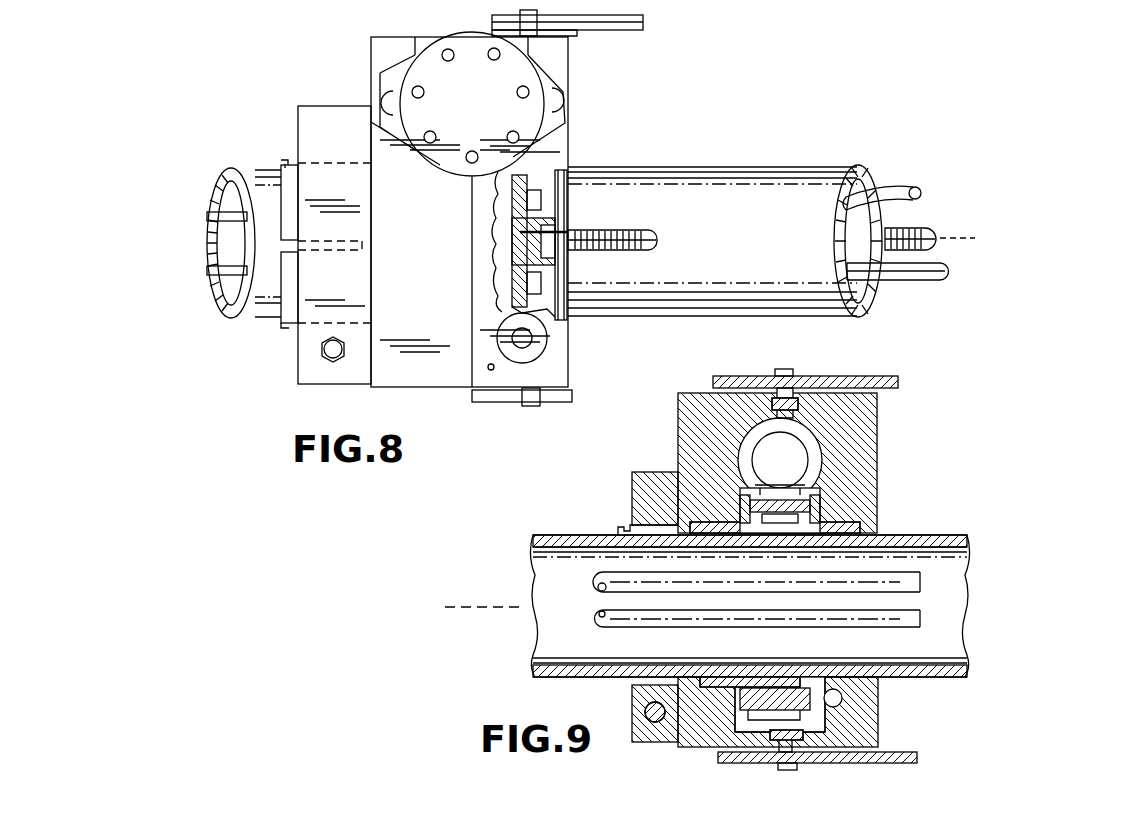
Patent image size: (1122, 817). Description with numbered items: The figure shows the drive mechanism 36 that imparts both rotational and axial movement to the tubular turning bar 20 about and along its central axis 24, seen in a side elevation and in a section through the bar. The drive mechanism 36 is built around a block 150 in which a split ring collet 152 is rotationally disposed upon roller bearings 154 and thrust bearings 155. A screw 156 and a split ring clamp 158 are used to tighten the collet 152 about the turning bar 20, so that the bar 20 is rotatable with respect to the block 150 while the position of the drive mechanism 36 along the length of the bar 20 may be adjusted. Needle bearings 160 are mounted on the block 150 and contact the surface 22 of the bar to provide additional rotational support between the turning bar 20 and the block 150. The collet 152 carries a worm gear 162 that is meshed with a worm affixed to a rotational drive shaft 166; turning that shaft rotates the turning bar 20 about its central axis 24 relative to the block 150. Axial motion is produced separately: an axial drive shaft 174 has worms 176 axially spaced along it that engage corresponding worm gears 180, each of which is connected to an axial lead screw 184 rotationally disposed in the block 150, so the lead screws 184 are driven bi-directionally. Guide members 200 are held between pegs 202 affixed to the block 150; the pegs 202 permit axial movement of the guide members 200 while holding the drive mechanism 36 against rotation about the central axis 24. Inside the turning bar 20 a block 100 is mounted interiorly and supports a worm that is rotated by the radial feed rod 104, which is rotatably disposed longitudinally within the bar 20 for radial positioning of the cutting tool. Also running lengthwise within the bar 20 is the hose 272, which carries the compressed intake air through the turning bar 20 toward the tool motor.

In FIG. 8, the turning bar 20 is at (740, 165).
In FIG. 9, the turning bar 20 is at (572, 532).
In FIG. 8, the surface 22 is at (762, 242).
In FIG. 9, the surface 22 is at (900, 535).
In FIG. 8, the central axis 24 is at (940, 244).
In FIG. 9, the central axis 24 is at (500, 612).
In FIG. 8, the drive mechanism 36 is at (355, 66).
In FIG. 9, the drive mechanism 36 is at (666, 420).
In FIG. 8, the block 100 is at (597, 30).
In FIG. 8, the radial feed rod 104 is at (884, 282).
In FIG. 9, the radial feed rod 104 is at (625, 628).
In FIG. 8, the block 150 is at (418, 388).
In FIG. 9, the block 150 is at (877, 445).
In FIG. 8, the split ring collet 152 is at (284, 162).
In FIG. 9, the split ring collet 152 is at (618, 525).
In FIG. 9, the roller bearings 154 is at (712, 668).
In FIG. 9, the thrust bearings 155 is at (766, 668).
In FIG. 8, the screw 156 is at (346, 362).
In FIG. 9, the screw 156 is at (640, 711).
In FIG. 8, the split ring clamp 158 is at (298, 365).
In FIG. 9, the split ring clamp 158 is at (665, 472).
In FIG. 9, the needle bearings 160 is at (840, 688).
In FIG. 9, the worm gear 162 is at (800, 480).
In FIG. 9, the rotational drive shaft 166 is at (727, 393).
In FIG. 8, the axial drive shaft 174 is at (535, 345).
In FIG. 8, the worms 176 is at (548, 328).
In FIG. 8, the worm gears 180 is at (510, 312).
In FIG. 8, the axial lead screws 184 is at (595, 232).
In FIG. 8, the guide members 200 is at (575, 398).
In FIG. 9, the guide members 200 is at (826, 376).
In FIG. 8, the pegs 202 is at (532, 11).
In FIG. 9, the pegs 202 is at (785, 368).
In FIG. 8, the hose 272 is at (888, 196).
In FIG. 9, the hose 272 is at (617, 574).